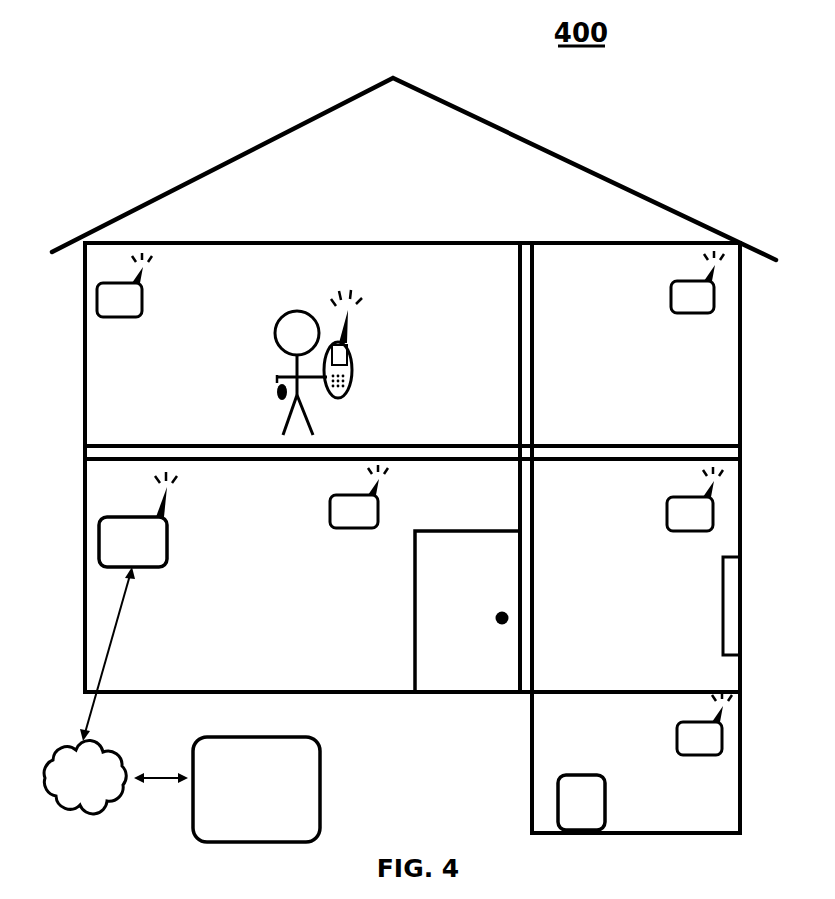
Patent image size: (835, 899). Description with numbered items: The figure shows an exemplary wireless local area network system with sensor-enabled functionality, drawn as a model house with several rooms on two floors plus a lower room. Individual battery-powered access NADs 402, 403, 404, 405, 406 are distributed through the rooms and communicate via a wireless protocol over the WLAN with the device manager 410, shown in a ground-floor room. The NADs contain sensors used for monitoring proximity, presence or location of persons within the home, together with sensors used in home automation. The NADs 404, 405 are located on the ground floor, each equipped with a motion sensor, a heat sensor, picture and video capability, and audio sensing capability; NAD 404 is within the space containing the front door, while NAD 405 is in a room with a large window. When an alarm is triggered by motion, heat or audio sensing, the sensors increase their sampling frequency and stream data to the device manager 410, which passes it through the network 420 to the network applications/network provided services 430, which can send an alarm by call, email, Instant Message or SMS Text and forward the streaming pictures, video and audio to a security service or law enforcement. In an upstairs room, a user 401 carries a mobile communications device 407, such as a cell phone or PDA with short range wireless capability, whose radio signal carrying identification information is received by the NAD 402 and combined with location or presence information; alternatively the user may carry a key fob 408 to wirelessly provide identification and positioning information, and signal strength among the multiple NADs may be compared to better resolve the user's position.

The user 401 is at (270, 337).
The access NAD 402 is at (149, 296).
The access NAD 403 is at (653, 297).
The access NAD 404 is at (325, 503).
The access NAD 405 is at (660, 502).
The access NAD 406 is at (667, 737).
The mobile communications device 407 is at (356, 350).
The key fob 408 is at (274, 386).
The device manager 410 is at (170, 540).
The network 420 is at (125, 748).
The network applications/network provided services 430 is at (325, 758).